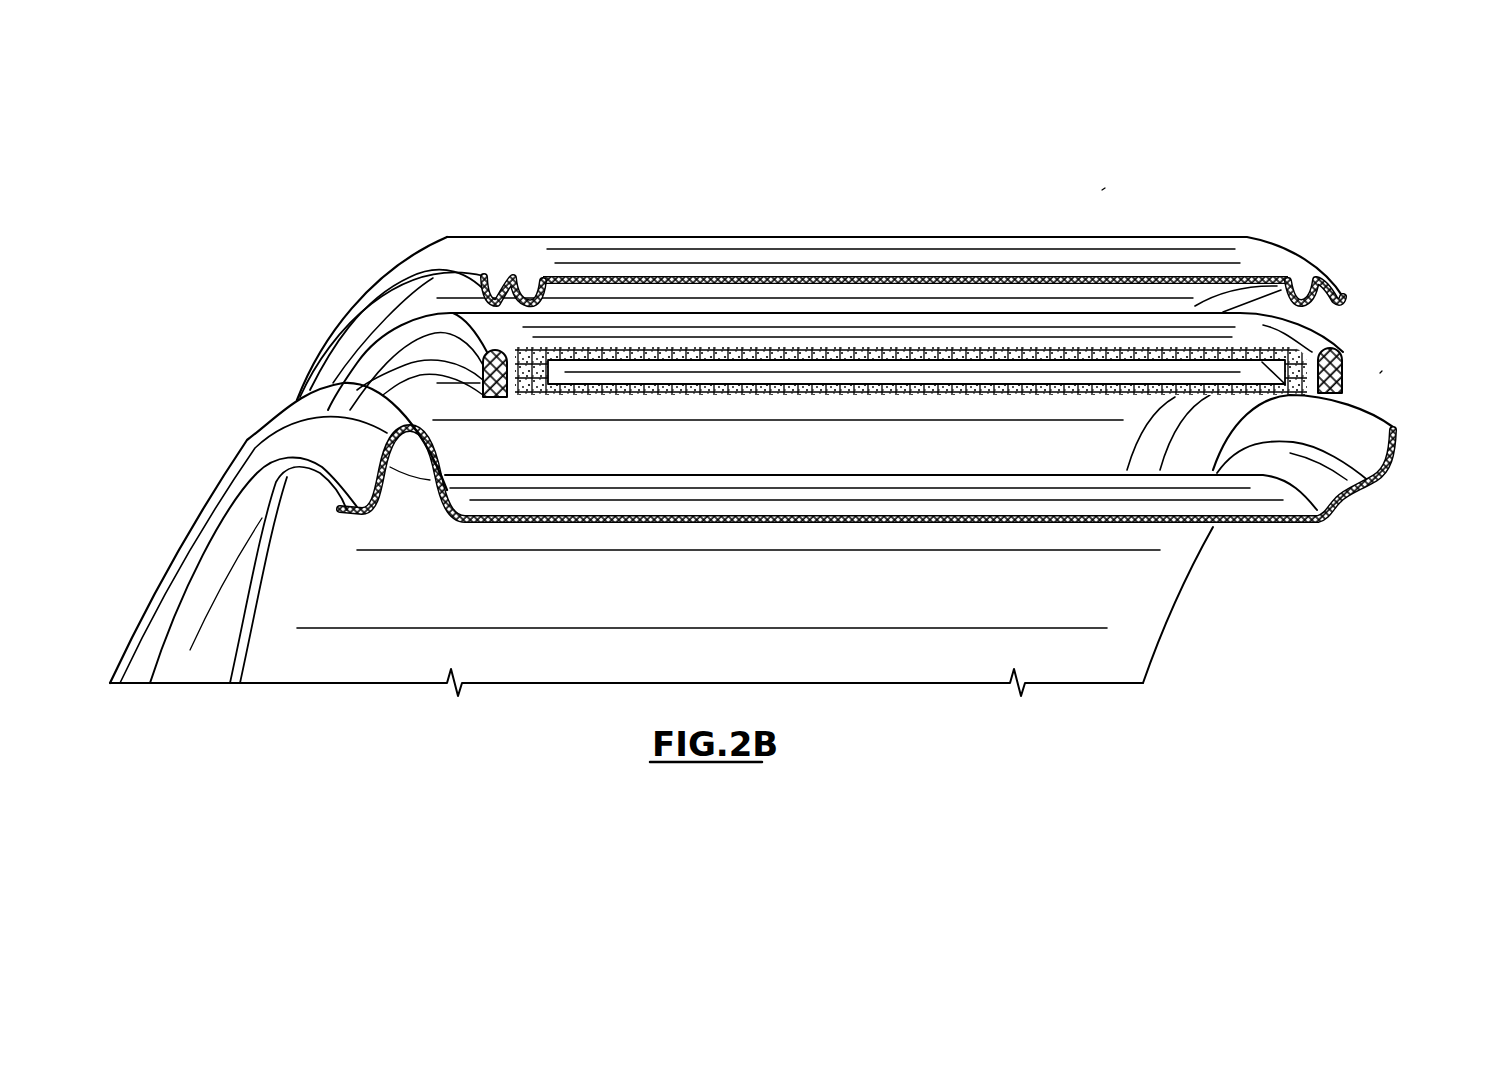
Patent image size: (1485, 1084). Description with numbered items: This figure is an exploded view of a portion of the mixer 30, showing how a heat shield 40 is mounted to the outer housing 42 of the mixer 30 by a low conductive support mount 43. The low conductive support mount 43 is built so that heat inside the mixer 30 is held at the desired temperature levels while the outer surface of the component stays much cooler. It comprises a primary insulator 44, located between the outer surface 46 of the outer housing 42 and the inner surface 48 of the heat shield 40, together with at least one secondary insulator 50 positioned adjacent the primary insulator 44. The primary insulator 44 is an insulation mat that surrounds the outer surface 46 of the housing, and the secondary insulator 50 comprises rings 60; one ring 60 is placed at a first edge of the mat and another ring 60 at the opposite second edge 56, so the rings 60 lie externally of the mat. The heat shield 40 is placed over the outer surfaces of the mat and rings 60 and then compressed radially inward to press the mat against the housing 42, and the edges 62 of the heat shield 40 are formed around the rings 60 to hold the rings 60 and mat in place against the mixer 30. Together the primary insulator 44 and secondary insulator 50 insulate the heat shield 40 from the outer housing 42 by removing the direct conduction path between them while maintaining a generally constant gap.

The mixer 30 is at (1105, 188).
The heat shield 40 is at (1218, 245).
The outer housing 42 is at (1390, 468).
The low conductive support mount configuration 43 is at (1382, 371).
The primary insulator 44 is at (1226, 397).
The outer surface of the outer housing 46 is at (1247, 498).
The inner surface of the heat shield 48 is at (1305, 317).
The secondary insulator 50 is at (440, 353).
The second edge of the insulation mat 56 is at (1300, 397).
The ring 60 is at (1340, 360).
The edges of the heat shield 62 is at (480, 275).